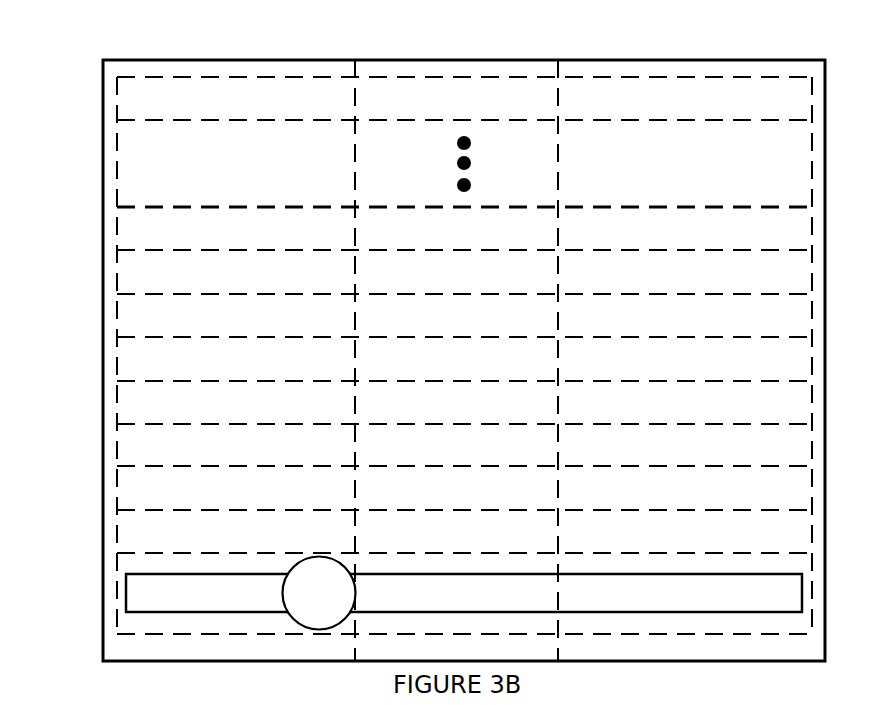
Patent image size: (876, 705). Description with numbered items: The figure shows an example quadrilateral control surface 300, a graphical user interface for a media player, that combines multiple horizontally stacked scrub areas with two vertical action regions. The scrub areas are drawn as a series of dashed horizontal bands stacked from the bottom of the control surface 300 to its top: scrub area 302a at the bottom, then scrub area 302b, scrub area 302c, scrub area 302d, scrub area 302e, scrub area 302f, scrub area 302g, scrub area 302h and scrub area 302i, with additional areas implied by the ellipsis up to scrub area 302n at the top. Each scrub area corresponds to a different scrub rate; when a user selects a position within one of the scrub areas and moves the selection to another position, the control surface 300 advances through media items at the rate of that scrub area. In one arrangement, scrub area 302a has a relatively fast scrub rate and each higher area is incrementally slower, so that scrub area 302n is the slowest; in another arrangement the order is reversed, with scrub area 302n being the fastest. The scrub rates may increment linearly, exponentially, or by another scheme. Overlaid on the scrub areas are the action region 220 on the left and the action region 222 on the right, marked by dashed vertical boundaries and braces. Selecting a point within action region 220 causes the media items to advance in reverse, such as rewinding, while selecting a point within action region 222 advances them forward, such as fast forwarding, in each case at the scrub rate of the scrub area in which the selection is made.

The quadrilateral control surface 300 is at (103, 62).
The action region 220 is at (355, 50).
The action region 222 is at (809, 52).
The scrub area 302n is at (98, 77).
The scrub area 302i is at (98, 207).
The scrub area 302h is at (98, 250).
The scrub area 302g is at (98, 294).
The scrub area 302f is at (98, 337).
The scrub area 302e is at (98, 381).
The scrub area 302d is at (98, 424).
The scrub area 302c is at (98, 466).
The scrub area 302b is at (98, 510).
The scrub area 302a is at (98, 553).